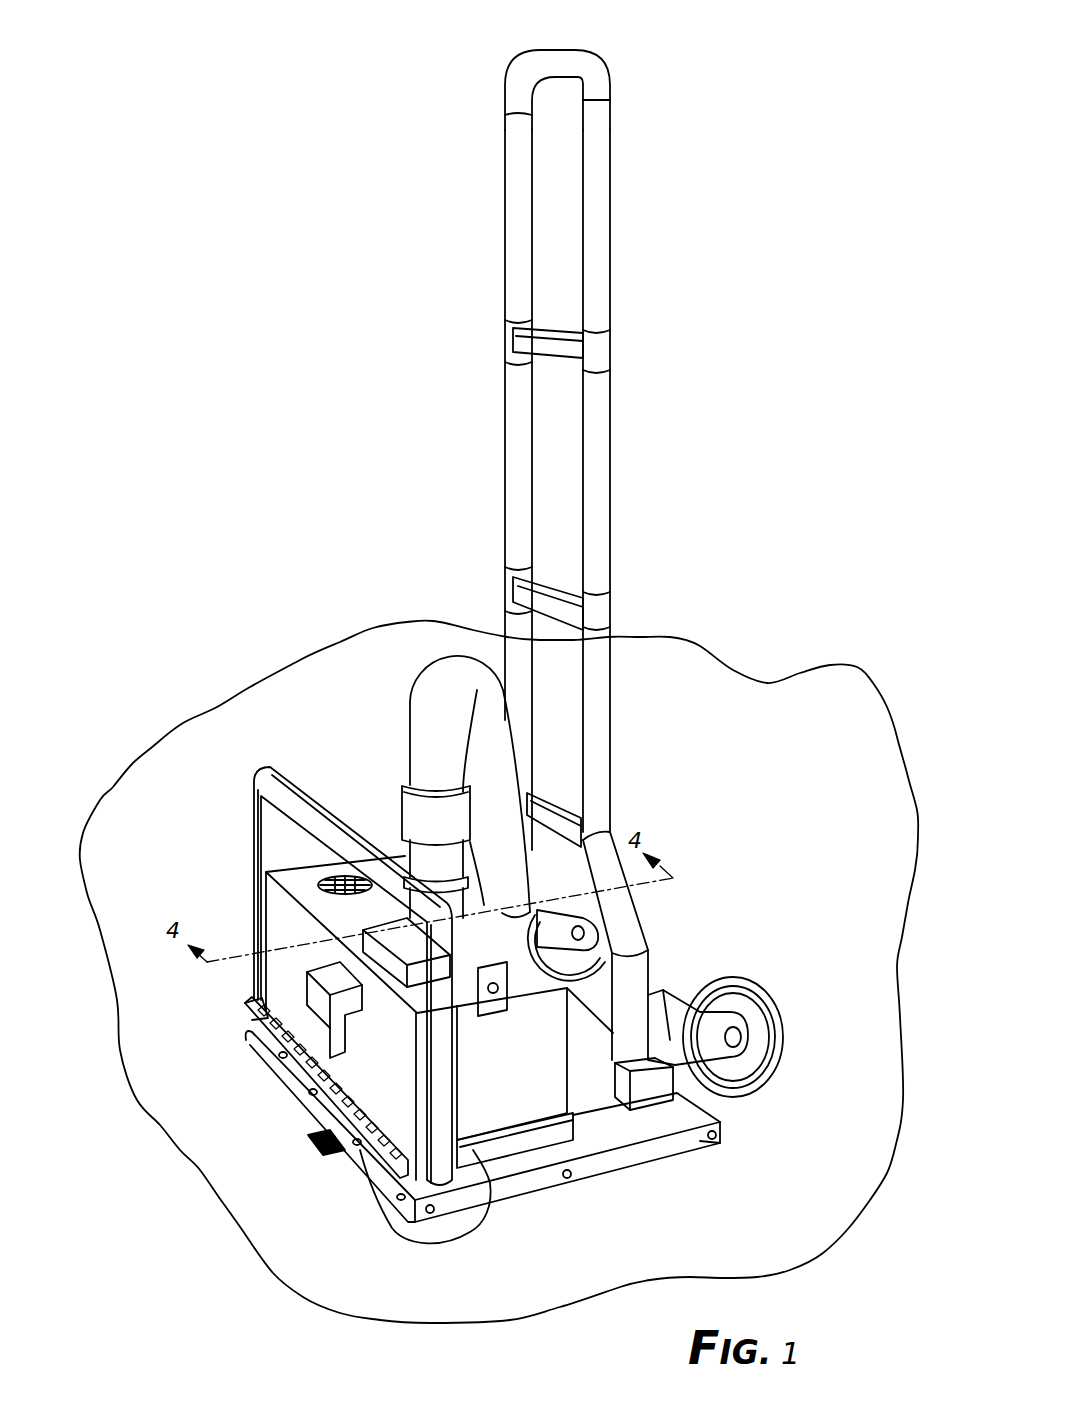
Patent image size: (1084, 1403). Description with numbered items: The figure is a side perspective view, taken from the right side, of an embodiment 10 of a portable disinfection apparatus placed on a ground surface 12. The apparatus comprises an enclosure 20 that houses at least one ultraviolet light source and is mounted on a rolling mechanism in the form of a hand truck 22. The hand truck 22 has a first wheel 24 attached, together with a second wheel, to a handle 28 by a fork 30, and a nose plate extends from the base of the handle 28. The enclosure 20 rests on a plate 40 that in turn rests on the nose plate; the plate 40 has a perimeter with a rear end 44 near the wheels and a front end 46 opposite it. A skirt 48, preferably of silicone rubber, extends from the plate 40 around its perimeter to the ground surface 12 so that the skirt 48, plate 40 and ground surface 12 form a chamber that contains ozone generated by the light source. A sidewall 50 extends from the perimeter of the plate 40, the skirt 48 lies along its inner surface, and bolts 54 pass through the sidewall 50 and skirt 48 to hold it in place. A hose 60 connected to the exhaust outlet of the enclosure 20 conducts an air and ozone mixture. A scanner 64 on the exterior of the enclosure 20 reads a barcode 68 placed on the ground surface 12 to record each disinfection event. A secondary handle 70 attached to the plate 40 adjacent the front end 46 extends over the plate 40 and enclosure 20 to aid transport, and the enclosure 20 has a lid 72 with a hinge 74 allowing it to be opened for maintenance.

The embodiment 10 is at (776, 230).
The ground surface 12 is at (761, 758).
The enclosure 20 is at (287, 880).
The hand truck 22 is at (615, 427).
The first wheel 24 is at (751, 1015).
The handle 28 is at (576, 68).
The fork 30 is at (742, 1012).
The plate 40 is at (620, 1128).
The rear end 44 is at (585, 997).
The front end 46 is at (454, 1139).
The skirt 48 is at (715, 1145).
The sidewall 50 is at (510, 1187).
The bolts 54 is at (571, 1178).
The hose 60 is at (442, 685).
The scanner 64 is at (268, 1028).
The barcode 68 is at (308, 1128).
The secondary handle 70 is at (283, 797).
The lid 72 is at (500, 1200).
The hinge 74 is at (365, 1165).